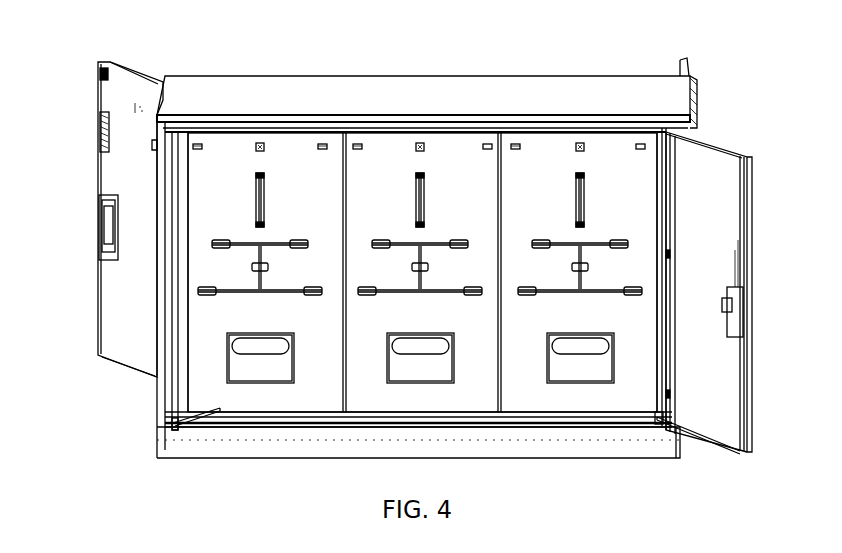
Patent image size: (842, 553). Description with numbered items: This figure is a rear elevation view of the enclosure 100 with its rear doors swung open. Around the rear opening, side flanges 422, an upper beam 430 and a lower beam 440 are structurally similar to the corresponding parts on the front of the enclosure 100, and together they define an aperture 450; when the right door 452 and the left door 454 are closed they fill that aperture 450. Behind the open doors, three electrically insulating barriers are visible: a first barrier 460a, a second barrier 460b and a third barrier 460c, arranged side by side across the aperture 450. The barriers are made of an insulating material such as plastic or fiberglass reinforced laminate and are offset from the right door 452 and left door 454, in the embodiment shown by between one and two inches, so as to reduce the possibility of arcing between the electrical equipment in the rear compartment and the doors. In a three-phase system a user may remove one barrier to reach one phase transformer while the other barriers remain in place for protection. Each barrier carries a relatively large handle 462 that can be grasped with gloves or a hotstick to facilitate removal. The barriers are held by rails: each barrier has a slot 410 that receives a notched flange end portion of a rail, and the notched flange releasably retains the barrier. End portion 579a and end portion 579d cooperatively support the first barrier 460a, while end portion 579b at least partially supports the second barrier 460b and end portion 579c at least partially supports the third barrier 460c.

The enclosure 100 is at (106, 48).
The slot 410 is at (516, 146).
The side flanges 422 is at (158, 457).
The upper beam 430 is at (627, 128).
The lower beam 440 is at (573, 450).
The aperture 450 is at (518, 400).
The right door 452 is at (715, 160).
The left door 454 is at (168, 427).
The first barrier 460a is at (242, 204).
The second barrier 460b is at (404, 204).
The third barrier 460c is at (554, 204).
The handle 462 is at (265, 200).
The end portion 579a is at (199, 146).
The end portion 579b is at (361, 145).
The end portion 579c is at (514, 146).
The end portion 579d is at (323, 146).